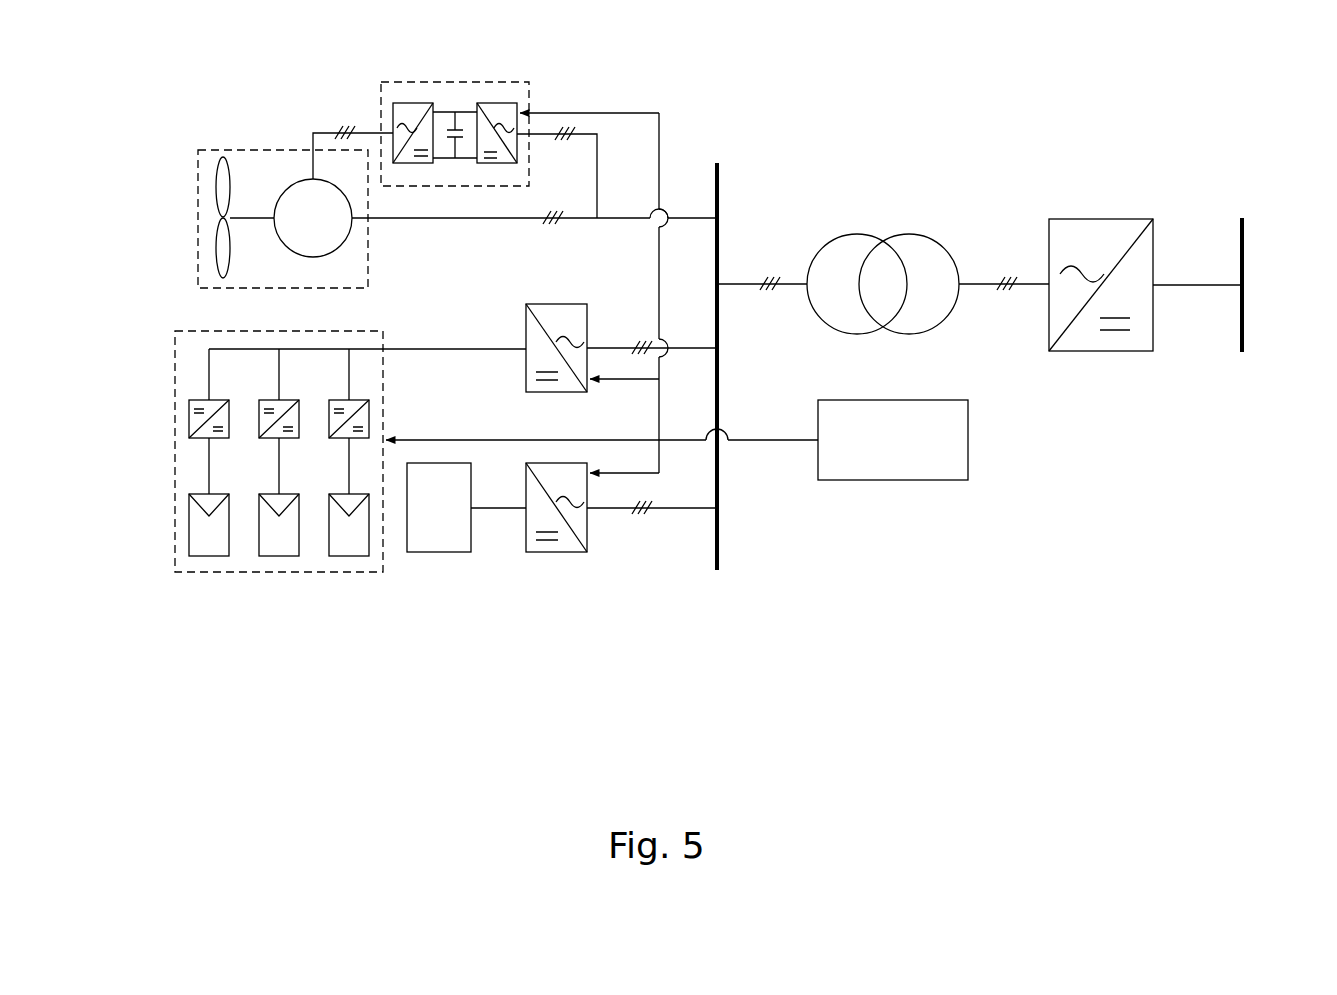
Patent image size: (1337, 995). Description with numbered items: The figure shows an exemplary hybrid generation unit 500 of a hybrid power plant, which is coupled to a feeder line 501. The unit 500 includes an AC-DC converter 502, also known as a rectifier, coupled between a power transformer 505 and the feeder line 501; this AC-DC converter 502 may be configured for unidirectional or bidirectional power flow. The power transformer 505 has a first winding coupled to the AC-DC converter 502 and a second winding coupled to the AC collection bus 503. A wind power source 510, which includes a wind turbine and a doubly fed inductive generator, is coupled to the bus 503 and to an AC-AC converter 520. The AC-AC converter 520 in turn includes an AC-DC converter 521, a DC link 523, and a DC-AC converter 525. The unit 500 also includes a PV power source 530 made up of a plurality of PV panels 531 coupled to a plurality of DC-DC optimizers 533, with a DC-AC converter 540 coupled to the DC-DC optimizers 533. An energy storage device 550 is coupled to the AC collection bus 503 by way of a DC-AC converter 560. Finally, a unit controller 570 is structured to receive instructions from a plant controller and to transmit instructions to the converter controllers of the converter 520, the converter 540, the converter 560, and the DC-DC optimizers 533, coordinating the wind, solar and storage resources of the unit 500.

The hybrid generation unit 500 is at (513, 624).
The feeder line 501 is at (1245, 232).
The AC-DC converter 502 is at (1078, 219).
The AC collection bus 503 is at (720, 174).
The power transformer 505 is at (882, 238).
The wind power source 510 is at (218, 150).
The AC-AC converter 520 is at (458, 82).
The AC-DC converter 521 is at (417, 103).
The DC link 523 is at (455, 163).
The DC-AC converter 525 is at (507, 103).
The PV power source 530 is at (180, 331).
The PV panels 531 is at (186, 526).
The DC-DC optimizers 533 is at (186, 430).
The DC-AC converter 540 is at (526, 309).
The energy storage device 550 is at (428, 553).
The DC-AC converter 560 is at (553, 553).
The unit controller 570 is at (968, 412).